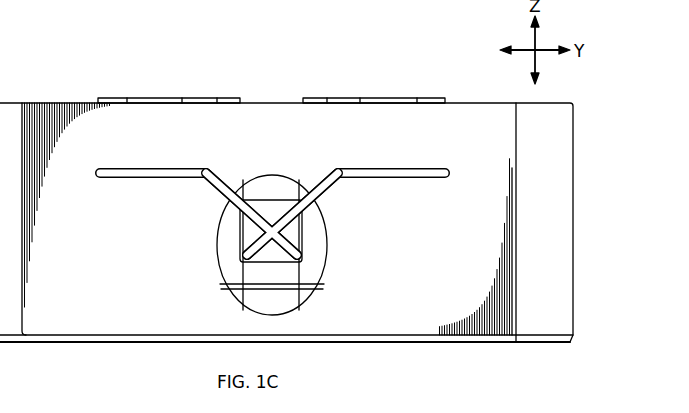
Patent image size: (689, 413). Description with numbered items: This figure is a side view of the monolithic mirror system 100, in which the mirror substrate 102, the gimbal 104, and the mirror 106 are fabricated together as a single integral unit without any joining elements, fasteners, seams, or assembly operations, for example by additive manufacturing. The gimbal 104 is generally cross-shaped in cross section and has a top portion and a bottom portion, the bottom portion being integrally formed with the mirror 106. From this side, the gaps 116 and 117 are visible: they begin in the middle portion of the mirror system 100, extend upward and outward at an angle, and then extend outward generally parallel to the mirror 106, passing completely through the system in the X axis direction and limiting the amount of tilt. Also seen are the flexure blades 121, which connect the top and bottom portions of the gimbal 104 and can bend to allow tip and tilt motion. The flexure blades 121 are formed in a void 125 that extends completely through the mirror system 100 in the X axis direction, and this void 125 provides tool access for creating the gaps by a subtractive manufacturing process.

The monolithic mirror system 100 is at (88, 51).
The mirror substrate 102 is at (574, 219).
The gimbal 104 is at (149, 96).
The mirror 106 is at (146, 343).
The gap 116 is at (121, 175).
The gap 117 is at (420, 175).
The flexure blades 121 is at (265, 200).
The void 125 is at (301, 229).